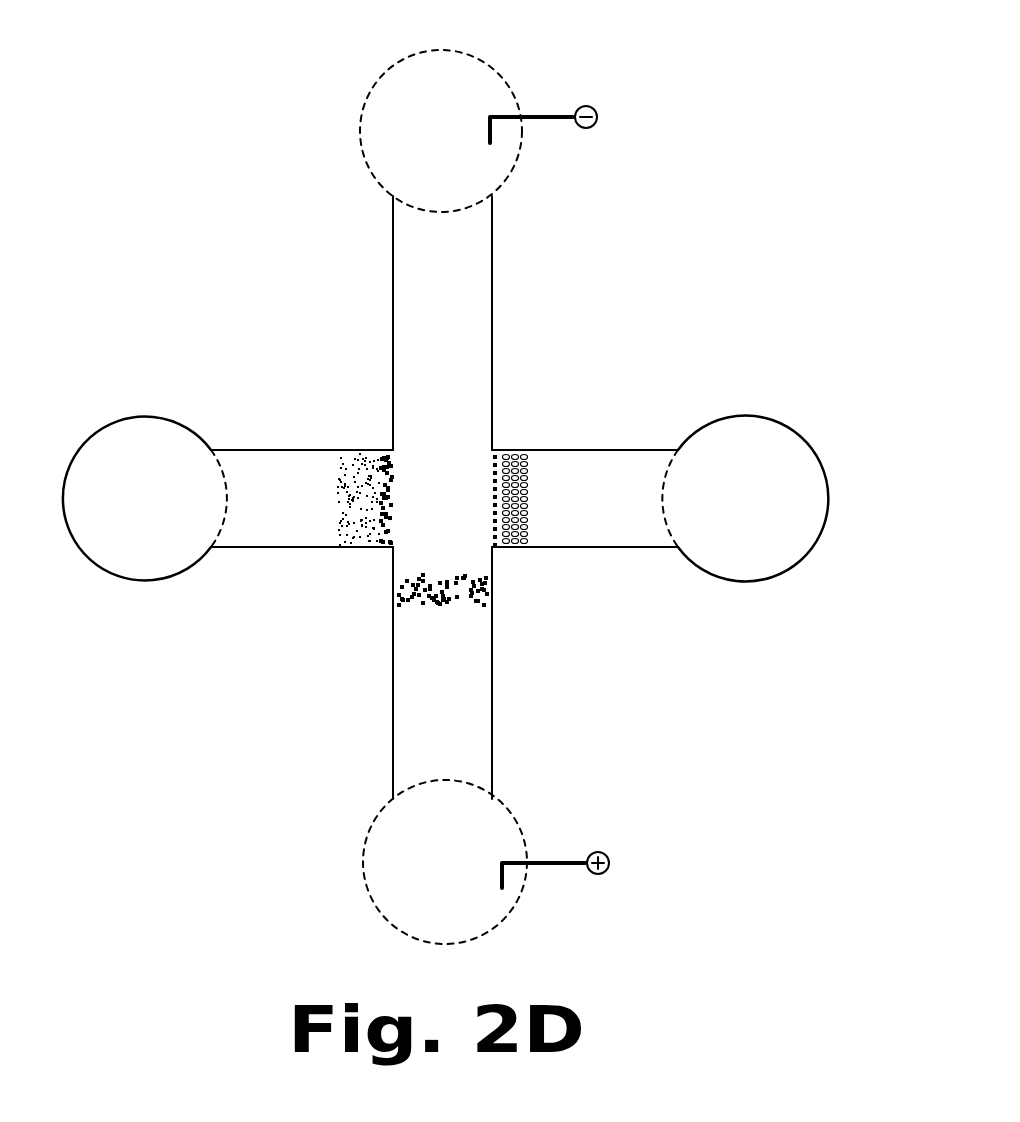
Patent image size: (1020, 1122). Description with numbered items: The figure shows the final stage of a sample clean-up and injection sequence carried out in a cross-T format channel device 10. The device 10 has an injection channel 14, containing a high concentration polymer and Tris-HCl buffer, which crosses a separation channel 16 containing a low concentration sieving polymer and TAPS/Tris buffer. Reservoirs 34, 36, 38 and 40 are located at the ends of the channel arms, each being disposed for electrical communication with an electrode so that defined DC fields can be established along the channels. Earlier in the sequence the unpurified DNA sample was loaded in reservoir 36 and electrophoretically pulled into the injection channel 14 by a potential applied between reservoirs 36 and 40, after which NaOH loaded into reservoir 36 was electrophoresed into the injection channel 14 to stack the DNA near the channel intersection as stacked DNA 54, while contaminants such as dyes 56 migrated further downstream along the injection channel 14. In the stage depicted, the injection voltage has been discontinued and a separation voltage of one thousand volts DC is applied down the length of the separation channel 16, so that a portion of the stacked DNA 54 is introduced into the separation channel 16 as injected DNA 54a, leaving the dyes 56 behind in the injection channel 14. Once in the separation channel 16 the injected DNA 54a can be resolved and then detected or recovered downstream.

The cross-T format channel device 10 is at (811, 312).
The injection channel 14 is at (270, 530).
The separation channel 16 is at (420, 690).
The reservoir 34 is at (395, 890).
The reservoir 36 is at (106, 560).
The reservoir 38 is at (466, 72).
The reservoir 40 is at (773, 563).
The stacked DNA 54 is at (383, 490).
The injected DNA 54a is at (485, 598).
The dyes 56 is at (516, 450).